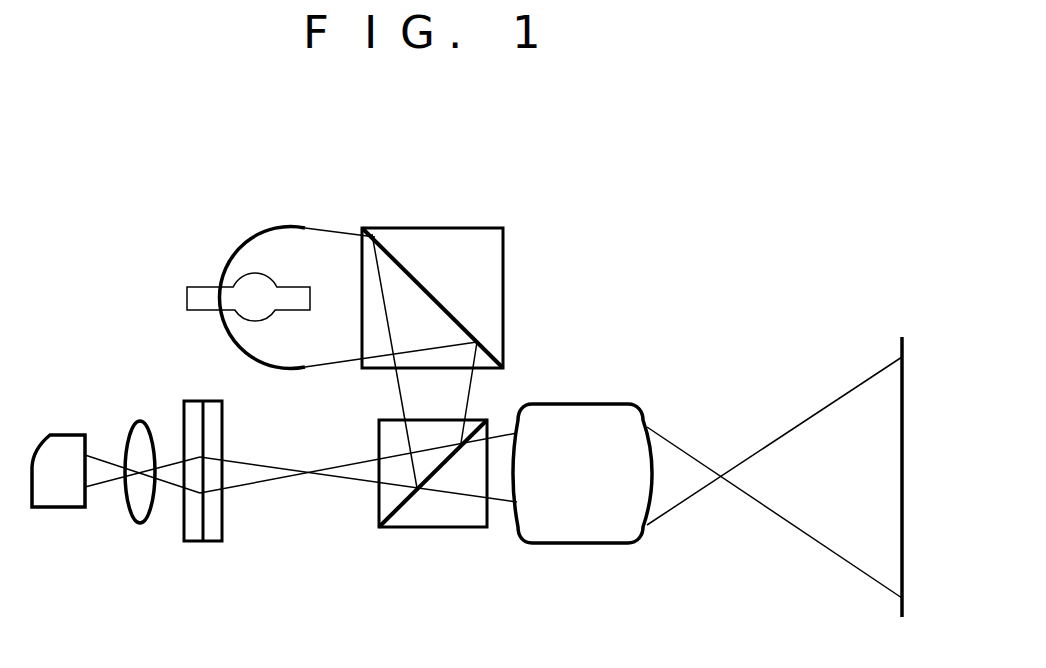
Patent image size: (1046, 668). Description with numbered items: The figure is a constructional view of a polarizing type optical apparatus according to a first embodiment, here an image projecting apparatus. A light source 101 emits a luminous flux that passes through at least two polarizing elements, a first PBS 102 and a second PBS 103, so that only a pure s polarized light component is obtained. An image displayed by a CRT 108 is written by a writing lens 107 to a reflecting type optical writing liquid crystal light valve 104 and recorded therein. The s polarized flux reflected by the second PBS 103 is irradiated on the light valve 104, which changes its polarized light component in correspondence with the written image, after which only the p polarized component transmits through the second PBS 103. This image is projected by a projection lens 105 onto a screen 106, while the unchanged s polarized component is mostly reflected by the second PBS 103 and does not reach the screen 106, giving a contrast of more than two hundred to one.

The light source 101 is at (247, 240).
The first PBS 102 is at (503, 283).
The second PBS 103 is at (432, 528).
The reflecting type optical writing liquid crystal light valve 104 is at (202, 544).
The projection lens 105 is at (580, 550).
The screen 106 is at (893, 612).
The writing lens 107 is at (137, 525).
The CRT 108 is at (70, 433).